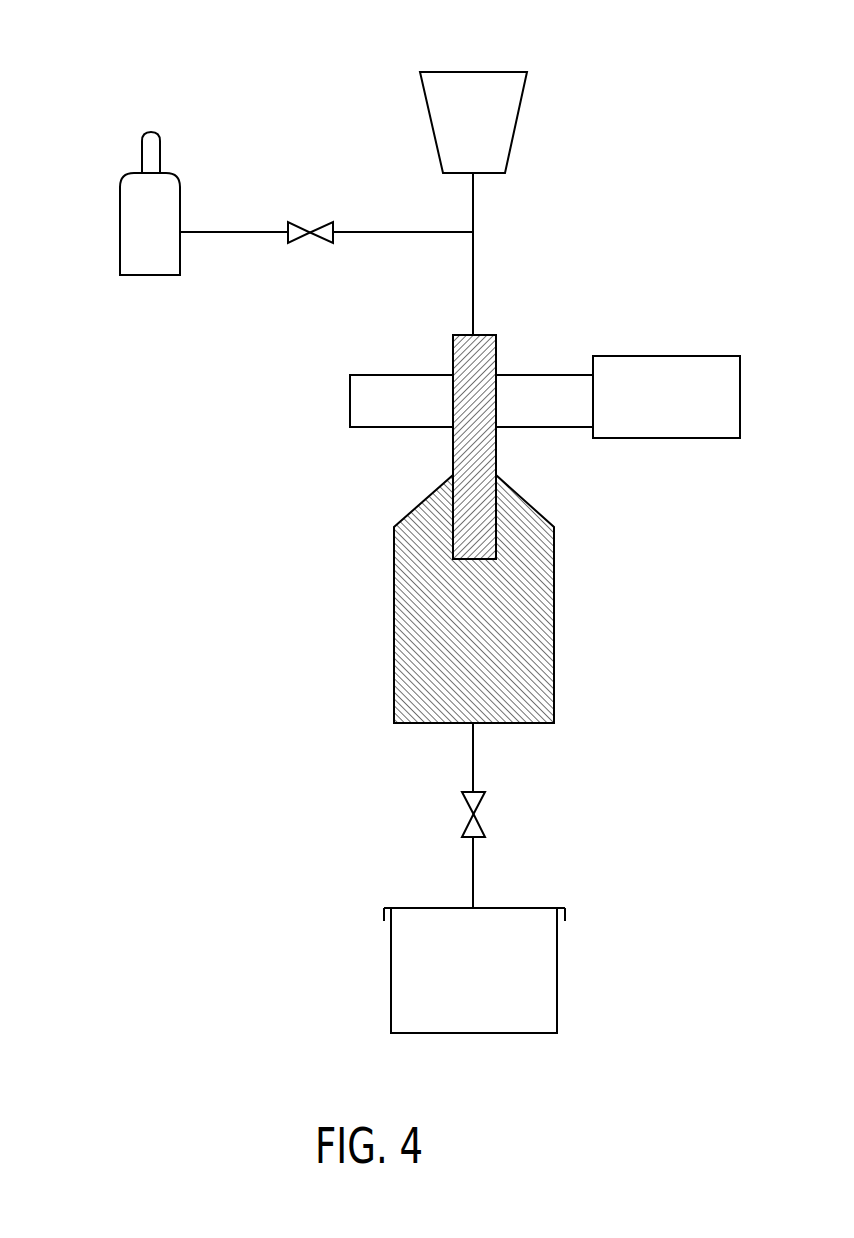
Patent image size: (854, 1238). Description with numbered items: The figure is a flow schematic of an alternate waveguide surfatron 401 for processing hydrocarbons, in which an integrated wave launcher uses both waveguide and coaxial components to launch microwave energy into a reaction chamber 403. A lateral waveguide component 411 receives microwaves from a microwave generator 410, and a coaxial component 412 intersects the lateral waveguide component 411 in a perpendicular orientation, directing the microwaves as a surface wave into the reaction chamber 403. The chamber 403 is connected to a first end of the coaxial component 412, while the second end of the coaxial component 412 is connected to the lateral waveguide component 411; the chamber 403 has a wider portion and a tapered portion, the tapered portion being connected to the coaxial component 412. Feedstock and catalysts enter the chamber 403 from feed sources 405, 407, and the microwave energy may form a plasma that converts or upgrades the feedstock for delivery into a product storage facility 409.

The waveguide surfatron 401 is at (204, 408).
The reaction chamber 403 is at (452, 725).
The feed source 405 is at (473, 72).
The feed source 407 is at (120, 227).
The product storage facility 409 is at (391, 978).
The microwave generator 410 is at (670, 355).
The lateral waveguide component 411 is at (557, 373).
The coaxial component 412 is at (452, 458).